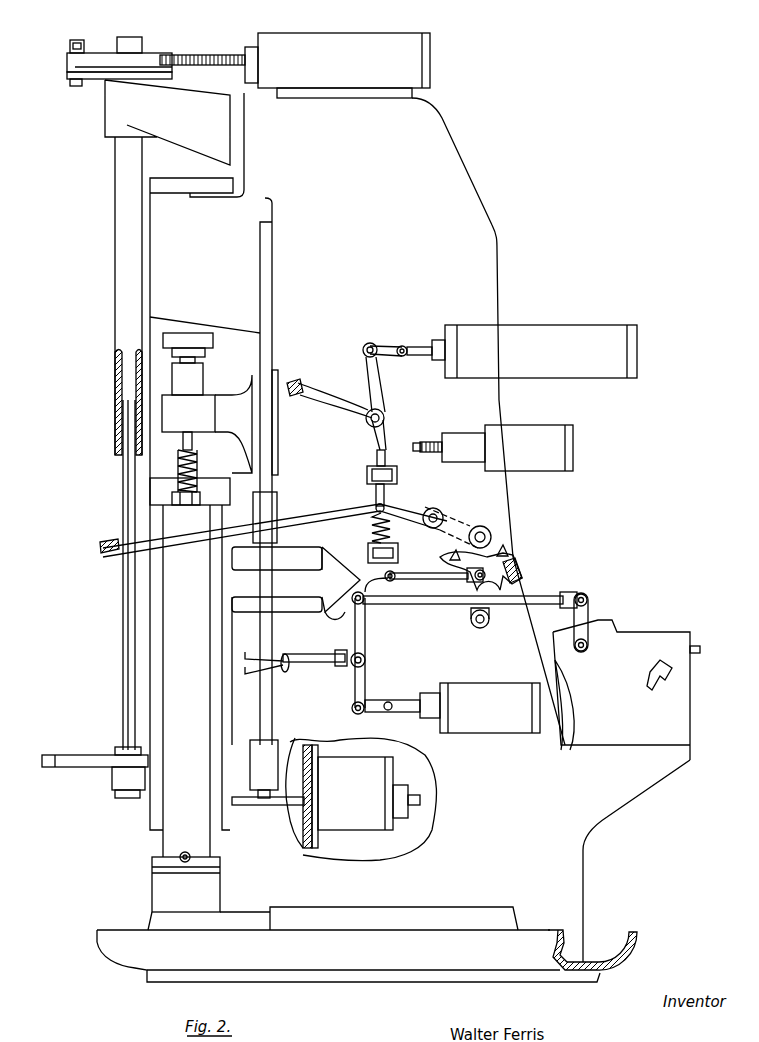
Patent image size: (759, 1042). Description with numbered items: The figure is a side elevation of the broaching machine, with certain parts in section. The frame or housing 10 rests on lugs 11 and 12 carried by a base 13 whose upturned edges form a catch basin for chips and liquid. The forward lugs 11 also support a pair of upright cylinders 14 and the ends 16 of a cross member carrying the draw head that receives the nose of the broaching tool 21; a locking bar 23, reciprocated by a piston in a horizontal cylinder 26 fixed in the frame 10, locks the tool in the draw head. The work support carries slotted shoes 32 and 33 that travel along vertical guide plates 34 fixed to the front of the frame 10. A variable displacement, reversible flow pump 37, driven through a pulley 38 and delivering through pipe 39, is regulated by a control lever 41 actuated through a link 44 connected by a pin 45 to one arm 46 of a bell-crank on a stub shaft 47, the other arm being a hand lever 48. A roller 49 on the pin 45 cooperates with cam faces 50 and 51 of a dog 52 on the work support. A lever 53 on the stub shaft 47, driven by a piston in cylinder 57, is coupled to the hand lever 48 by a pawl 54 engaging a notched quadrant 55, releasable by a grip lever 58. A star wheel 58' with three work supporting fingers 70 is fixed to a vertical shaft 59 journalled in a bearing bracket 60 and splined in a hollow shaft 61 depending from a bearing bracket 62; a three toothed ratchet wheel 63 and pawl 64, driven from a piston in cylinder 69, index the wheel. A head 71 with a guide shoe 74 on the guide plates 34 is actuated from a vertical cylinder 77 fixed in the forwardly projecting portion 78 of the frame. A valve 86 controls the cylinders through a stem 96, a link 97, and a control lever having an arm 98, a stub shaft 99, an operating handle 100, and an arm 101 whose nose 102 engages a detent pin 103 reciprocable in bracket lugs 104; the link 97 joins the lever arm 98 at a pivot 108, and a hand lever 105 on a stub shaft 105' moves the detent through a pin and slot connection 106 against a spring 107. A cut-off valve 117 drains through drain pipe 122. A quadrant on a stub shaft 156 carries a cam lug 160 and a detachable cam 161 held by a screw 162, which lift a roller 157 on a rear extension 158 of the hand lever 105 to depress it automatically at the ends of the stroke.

The frame 10 is at (460, 213).
The forward lugs 11 is at (255, 921).
The lug 12 is at (570, 940).
The base 13 is at (425, 955).
The upright cylinders 14 is at (180, 798).
The opposite ends of cross member 16 is at (200, 893).
The broaching tool 21 is at (195, 460).
The locking bar 23 is at (258, 805).
The horizontal cylinder 26 is at (342, 793).
The upper slotted shoe 32 is at (267, 517).
The lower slotted shoe 33 is at (267, 745).
The vertical guide plates 34 is at (263, 283).
The pump 37 is at (632, 645).
The pulley 38 is at (570, 717).
The pipe 39 is at (660, 693).
The control lever 41 is at (587, 617).
The link 44 is at (450, 604).
The pin 45 is at (368, 603).
The bell-crank arm 46 is at (365, 628).
The stub shaft 47 is at (368, 660).
The hand lever 48 is at (248, 652).
The roller 49 is at (352, 595).
The cam face 50 is at (337, 617).
The cam face 51 is at (343, 565).
The dog 52 is at (333, 567).
The lever 53 is at (358, 690).
The pawl 54 is at (333, 673).
The notched quadrant 55 is at (343, 650).
The cylinder 57 is at (520, 720).
The grip lever 58 is at (258, 683).
The star wheel 58' is at (110, 733).
The vertical shaft 59 is at (120, 618).
The bearing bracket 60 is at (118, 780).
The hollow shaft 61 is at (128, 233).
The bearing bracket 62 is at (128, 108).
The ratchet wheel 63 is at (147, 72).
The pawl 64 is at (100, 75).
The cylinder 69 is at (344, 65).
The work supporting fingers 70 is at (58, 755).
The head 71 is at (177, 410).
The guide shoe 74 is at (240, 405).
The vertical cylinder 77 is at (177, 333).
The forwardly projecting portion 78 is at (167, 263).
The valve 86 is at (541, 351).
The stem 96 is at (420, 345).
The link 97 is at (390, 350).
The control lever arm 98 is at (368, 370).
The stub shaft 99 is at (385, 418).
The operating handle 100 is at (303, 387).
The control lever arm 101 is at (374, 435).
The nose 102 is at (377, 455).
The detent pin 103 is at (385, 492).
The bracket lugs 104 is at (390, 476).
The hand lever 105 is at (253, 530).
The stub shaft 105' is at (449, 507).
The pin and slot connection 106 is at (375, 507).
The spring 107 is at (390, 530).
The pivot 108 is at (365, 347).
The cut-off valve 117 is at (518, 447).
The drain pipe 122 is at (697, 645).
The stub shaft 156 is at (487, 623).
The roller 157 is at (495, 533).
The rear extension 158 is at (477, 515).
The cam lug 160 is at (455, 553).
The cam 161 is at (508, 550).
The screw 162 is at (525, 578).